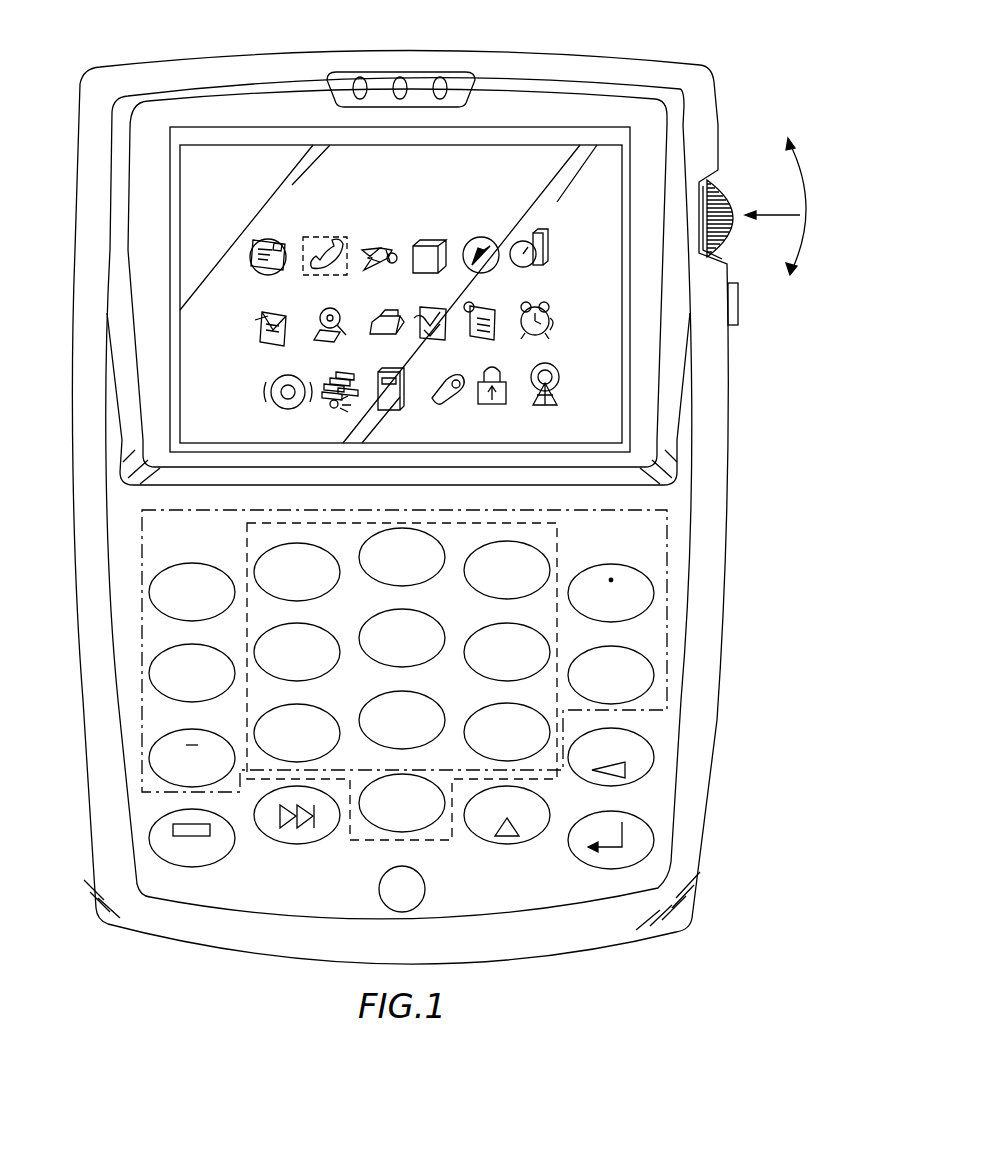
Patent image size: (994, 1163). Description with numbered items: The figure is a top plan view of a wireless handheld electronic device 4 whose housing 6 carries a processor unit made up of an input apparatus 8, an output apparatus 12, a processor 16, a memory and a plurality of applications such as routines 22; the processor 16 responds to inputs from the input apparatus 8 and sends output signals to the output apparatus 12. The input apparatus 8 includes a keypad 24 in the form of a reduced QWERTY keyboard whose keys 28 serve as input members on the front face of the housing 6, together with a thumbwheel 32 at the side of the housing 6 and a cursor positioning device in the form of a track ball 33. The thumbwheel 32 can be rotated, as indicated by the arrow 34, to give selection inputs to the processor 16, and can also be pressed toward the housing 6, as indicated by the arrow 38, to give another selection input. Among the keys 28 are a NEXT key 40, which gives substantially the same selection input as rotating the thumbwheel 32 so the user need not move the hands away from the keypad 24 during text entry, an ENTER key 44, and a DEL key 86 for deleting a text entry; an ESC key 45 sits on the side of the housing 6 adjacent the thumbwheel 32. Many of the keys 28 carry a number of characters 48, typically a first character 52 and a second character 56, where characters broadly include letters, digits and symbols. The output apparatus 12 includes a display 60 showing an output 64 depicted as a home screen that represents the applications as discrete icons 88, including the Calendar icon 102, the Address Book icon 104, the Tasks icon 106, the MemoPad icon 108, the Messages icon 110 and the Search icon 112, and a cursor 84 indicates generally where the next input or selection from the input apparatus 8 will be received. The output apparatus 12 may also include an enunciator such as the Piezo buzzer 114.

The handheld electronic device 4 is at (226, 36).
The housing 6 is at (592, 57).
The input apparatus 8 is at (686, 515).
The output apparatus 12 is at (496, 110).
The processor 16 is at (120, 536).
The routines 22 is at (120, 503).
The keypad 24 is at (662, 654).
The keys 28 is at (165, 565).
The thumbwheel 32 is at (712, 207).
The track ball 33 is at (423, 878).
The arrow 34 is at (808, 166).
The arrow 38 is at (770, 215).
The NEXT key 40 is at (305, 843).
The ENTER key 44 is at (645, 817).
The ESC key 45 is at (730, 300).
The characters 48 is at (600, 612).
The first character 52 is at (175, 672).
The second character 56 is at (205, 672).
The display 60 is at (597, 168).
The output 64 is at (462, 230).
The cursor 84 is at (315, 237).
The DEL key 86 is at (652, 777).
The icons 88 is at (560, 230).
The Calendar icon 102 is at (435, 235).
The Address Book icon 104 is at (376, 238).
The Tasks icon 106 is at (433, 308).
The MemoPad icon 108 is at (478, 306).
The Messages icon 110 is at (280, 318).
The Search icon 112 is at (330, 314).
The Piezo buzzer 114 is at (386, 78).